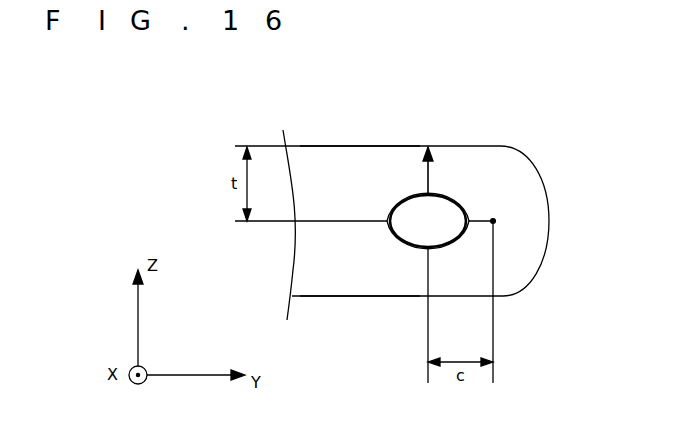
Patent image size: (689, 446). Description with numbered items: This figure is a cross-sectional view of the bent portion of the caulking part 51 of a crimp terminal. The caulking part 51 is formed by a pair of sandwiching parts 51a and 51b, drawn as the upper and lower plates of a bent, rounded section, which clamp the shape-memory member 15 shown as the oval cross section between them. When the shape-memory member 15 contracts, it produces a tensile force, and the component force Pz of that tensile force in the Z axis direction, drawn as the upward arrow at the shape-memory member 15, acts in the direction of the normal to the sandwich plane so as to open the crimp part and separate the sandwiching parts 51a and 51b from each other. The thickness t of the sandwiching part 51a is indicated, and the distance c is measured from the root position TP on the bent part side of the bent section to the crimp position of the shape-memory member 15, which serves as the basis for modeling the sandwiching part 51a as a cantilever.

The caulking part 51 is at (378, 161).
The sandwiching part 51a is at (305, 161).
The sandwiching part 51b is at (301, 285).
The shape-memory member 15 is at (412, 232).
The component force Pz is at (428, 152).
The root position TP is at (493, 221).